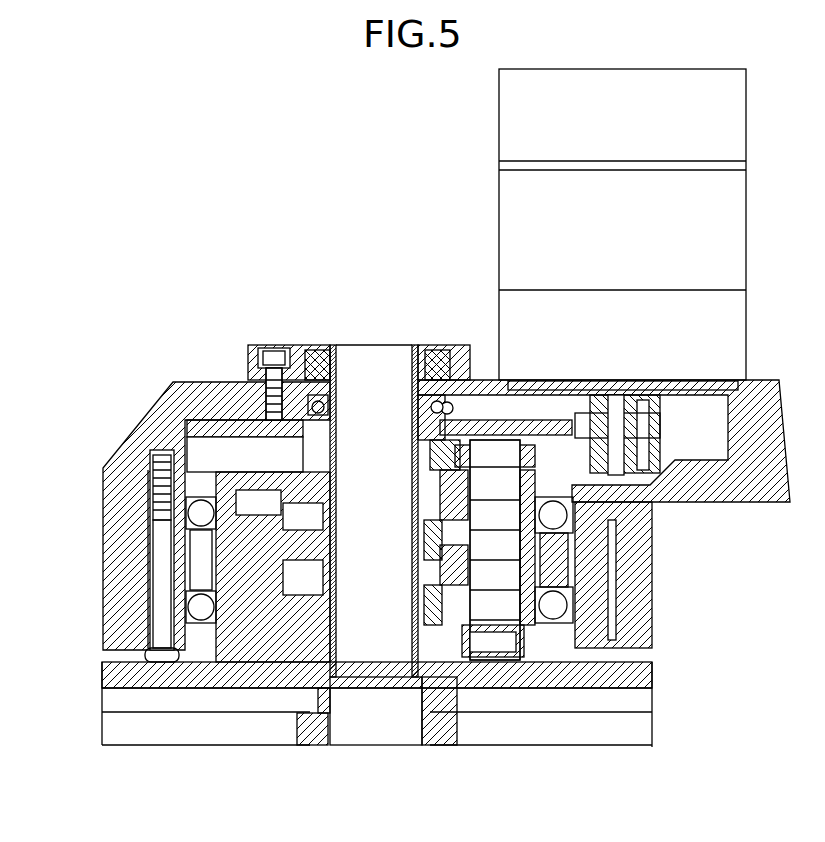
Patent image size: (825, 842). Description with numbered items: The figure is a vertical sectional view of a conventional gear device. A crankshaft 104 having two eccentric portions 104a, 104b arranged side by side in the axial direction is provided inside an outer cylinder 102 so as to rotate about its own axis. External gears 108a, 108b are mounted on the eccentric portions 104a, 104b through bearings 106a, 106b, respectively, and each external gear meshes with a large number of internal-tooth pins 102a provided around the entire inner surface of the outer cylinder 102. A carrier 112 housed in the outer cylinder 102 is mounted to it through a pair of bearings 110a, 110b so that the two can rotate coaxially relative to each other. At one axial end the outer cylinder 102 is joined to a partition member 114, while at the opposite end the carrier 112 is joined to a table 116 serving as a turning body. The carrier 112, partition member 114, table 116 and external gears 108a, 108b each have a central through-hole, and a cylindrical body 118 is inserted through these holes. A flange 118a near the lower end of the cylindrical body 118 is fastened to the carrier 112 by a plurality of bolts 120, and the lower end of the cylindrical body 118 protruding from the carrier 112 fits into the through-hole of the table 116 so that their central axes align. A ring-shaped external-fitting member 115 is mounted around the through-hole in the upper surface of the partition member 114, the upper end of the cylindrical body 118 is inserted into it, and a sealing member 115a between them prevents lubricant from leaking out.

The outer cylinder 102 is at (612, 640).
The internal-tooth pins 102a is at (565, 540).
The crankshaft 104 is at (490, 660).
The eccentric portion 104a is at (440, 522).
The eccentric portion 104b is at (452, 560).
The bearing 106a is at (465, 545).
The bearing 106b is at (430, 595).
The external gear 108a is at (555, 565).
The external gear 108b is at (560, 592).
The bearing 110a is at (170, 452).
The bearing 110b is at (170, 615).
The carrier 112 is at (263, 537).
The partition member 114 is at (213, 380).
The external-fitting member 115 is at (450, 350).
The sealing member 115a is at (318, 353).
The table 116 is at (428, 748).
The cylindrical body 118 is at (338, 405).
The flange 118a is at (336, 640).
The bolts 120 is at (318, 745).